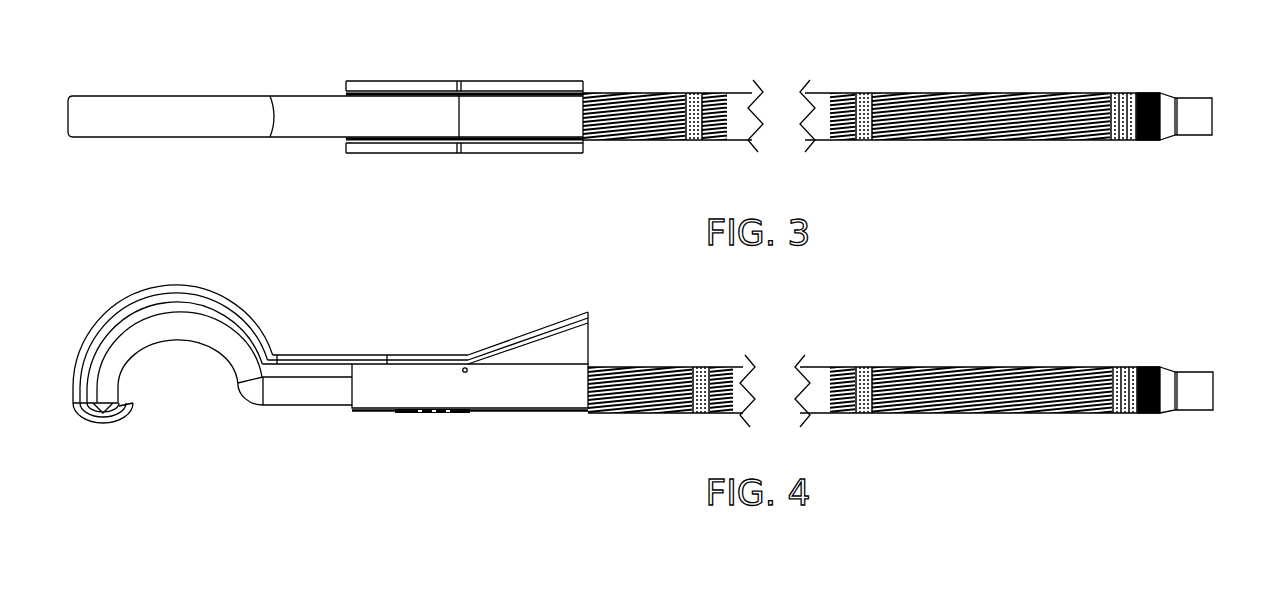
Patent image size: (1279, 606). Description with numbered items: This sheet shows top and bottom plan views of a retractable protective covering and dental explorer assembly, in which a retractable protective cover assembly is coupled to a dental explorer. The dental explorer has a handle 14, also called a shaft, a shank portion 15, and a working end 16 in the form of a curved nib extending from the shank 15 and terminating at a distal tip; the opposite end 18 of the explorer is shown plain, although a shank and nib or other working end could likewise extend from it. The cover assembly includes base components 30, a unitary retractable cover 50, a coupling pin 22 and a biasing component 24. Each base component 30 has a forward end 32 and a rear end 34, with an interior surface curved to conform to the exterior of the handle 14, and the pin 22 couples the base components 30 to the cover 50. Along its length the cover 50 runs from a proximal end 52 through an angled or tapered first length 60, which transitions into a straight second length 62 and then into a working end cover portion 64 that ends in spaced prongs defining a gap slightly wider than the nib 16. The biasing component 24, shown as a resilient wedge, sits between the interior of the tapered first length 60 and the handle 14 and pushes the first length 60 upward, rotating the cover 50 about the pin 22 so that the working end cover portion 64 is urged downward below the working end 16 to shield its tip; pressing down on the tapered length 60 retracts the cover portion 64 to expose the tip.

In FIG. 3, the handle 14 is at (655, 93).
In FIG. 4, the handle 14 is at (652, 367).
In FIG. 4, the shank portion 15 is at (252, 428).
In FIG. 4, the working end 16 is at (142, 384).
In FIG. 3, the opposite end 18 is at (1217, 108).
In FIG. 4, the opposite end 18 is at (1222, 372).
In FIG. 3, the coupling pin 22 is at (460, 154).
In FIG. 4, the coupling pin 22 is at (467, 373).
In FIG. 4, the biasing component 24 is at (584, 340).
In FIG. 3, the base component 30 is at (480, 88).
In FIG. 4, the base component 30 is at (548, 397).
In FIG. 3, the forward end 32 is at (345, 92).
In FIG. 3, the rear end 34 is at (585, 151).
In FIG. 4, the rear end 34 is at (604, 367).
In FIG. 3, the unitary retractable cover 50 is at (291, 106).
In FIG. 4, the unitary retractable cover 50 is at (316, 354).
In FIG. 3, the proximal end 52 is at (598, 98).
In FIG. 3, the first length 60 is at (500, 110).
In FIG. 4, the first length 60 is at (522, 334).
In FIG. 3, the second length 62 is at (363, 108).
In FIG. 4, the second length 62 is at (372, 363).
In FIG. 3, the working end cover portion 64 is at (167, 110).
In FIG. 4, the working end cover portion 64 is at (185, 290).